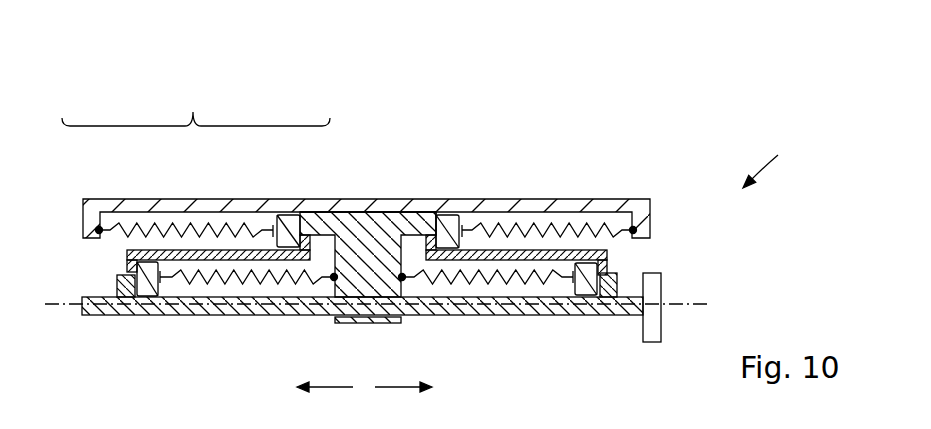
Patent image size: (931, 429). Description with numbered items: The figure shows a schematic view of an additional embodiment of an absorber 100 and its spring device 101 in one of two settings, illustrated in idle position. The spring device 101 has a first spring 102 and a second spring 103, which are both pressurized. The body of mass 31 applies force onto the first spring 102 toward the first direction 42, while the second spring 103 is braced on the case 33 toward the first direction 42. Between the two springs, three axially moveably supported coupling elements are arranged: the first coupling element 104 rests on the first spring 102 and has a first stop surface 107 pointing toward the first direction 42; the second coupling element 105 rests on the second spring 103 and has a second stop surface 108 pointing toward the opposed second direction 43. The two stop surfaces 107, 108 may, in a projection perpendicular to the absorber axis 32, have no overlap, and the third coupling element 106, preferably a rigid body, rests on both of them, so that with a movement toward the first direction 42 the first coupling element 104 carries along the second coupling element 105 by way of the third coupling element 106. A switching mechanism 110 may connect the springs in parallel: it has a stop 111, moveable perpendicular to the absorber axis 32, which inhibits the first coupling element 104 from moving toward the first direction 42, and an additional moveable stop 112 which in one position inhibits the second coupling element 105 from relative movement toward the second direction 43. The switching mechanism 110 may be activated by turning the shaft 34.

The absorber 100 is at (768, 155).
The spring device 101 is at (196, 99).
The second spring 103 is at (125, 238).
The first stop surface 107 is at (128, 268).
The third coupling element 106 is at (227, 252).
The second coupling element 105 is at (290, 233).
The second stop surface 108 is at (305, 230).
The additional moveable stop 112 is at (323, 233).
The body of mass 31 is at (353, 230).
The case 33 is at (437, 217).
The stop 111 is at (125, 290).
The first coupling element 104 is at (147, 283).
The first spring 102 is at (235, 303).
The first direction 42 is at (343, 388).
The second direction 43 is at (403, 388).
The shaft 34 is at (617, 313).
The absorber axis 32 is at (678, 307).
The switching mechanism 110 is at (650, 327).